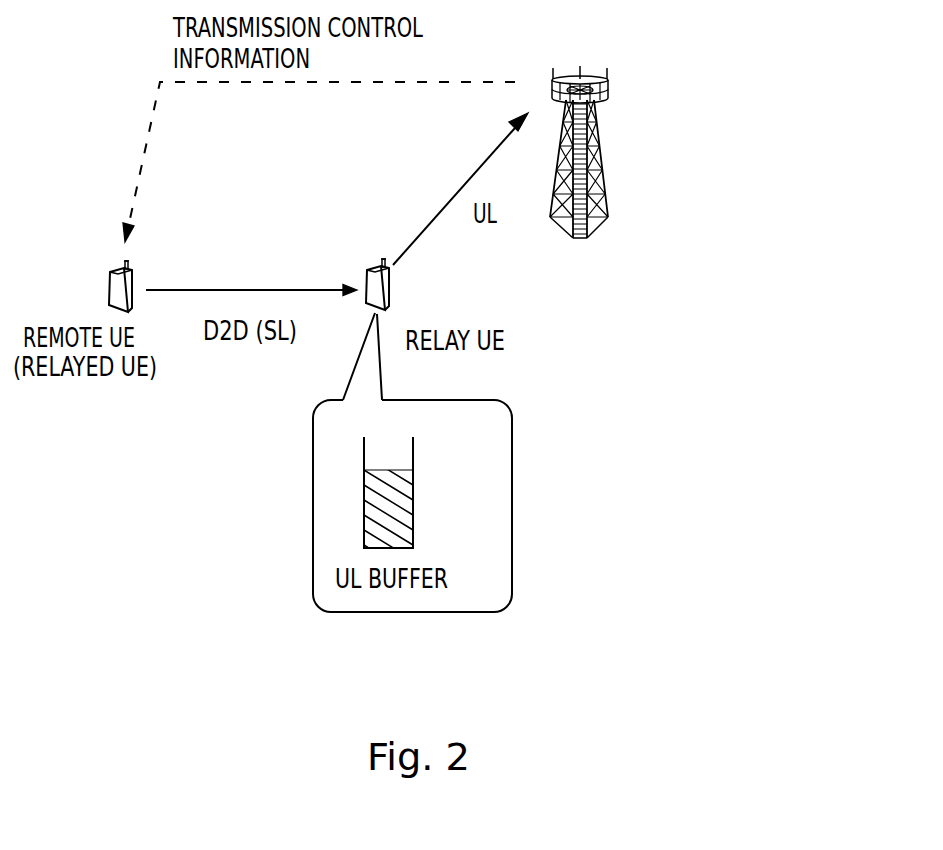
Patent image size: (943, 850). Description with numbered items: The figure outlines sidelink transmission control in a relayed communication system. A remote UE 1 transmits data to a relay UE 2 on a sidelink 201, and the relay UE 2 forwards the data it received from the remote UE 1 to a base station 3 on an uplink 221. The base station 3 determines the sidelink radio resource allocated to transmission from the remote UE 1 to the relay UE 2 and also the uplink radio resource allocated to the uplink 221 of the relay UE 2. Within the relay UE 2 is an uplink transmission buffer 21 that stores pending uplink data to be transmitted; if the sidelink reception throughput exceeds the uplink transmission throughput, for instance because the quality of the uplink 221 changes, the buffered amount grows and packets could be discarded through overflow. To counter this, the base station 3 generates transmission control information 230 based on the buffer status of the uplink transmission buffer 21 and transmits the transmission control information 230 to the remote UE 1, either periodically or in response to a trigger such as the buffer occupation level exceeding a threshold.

The remote UE 1 is at (108, 284).
The relay UE 2 is at (390, 290).
The base station 3 is at (597, 152).
The uplink transmission buffer 21 is at (470, 478).
The sidelink 201 is at (262, 286).
The uplink 221 is at (470, 175).
The transmission control information 230 is at (148, 130).